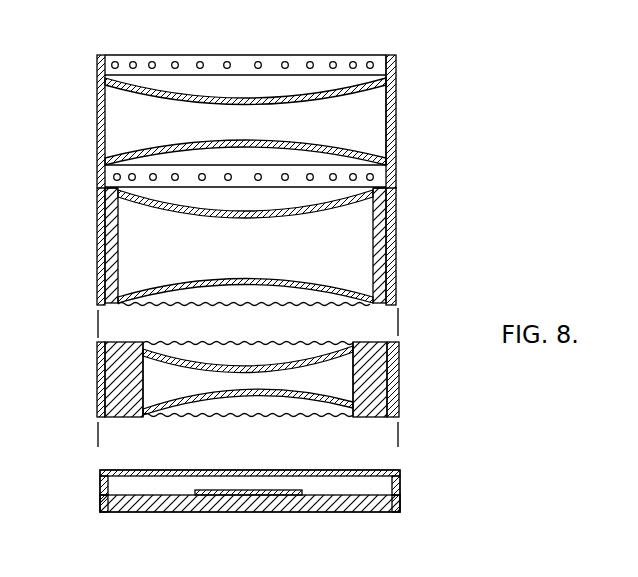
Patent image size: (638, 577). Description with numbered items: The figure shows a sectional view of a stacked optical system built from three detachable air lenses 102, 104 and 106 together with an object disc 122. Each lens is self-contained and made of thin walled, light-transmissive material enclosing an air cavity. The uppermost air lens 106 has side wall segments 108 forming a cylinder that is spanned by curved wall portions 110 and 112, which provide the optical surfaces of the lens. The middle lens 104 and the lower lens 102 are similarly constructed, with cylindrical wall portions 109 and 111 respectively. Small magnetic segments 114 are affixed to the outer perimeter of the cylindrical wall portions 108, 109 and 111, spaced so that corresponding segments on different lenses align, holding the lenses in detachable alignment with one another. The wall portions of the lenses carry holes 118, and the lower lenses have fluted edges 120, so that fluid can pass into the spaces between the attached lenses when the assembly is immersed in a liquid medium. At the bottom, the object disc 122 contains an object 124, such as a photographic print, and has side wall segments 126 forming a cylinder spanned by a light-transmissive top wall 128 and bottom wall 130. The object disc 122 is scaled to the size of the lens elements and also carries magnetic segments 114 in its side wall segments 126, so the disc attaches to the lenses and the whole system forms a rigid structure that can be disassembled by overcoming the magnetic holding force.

The air lens 102 is at (73, 387).
The air lens 104 is at (73, 255).
The air lens 106 is at (73, 131).
The side wall segments 108 is at (397, 121).
The cylindrical wall portion 109 is at (397, 241).
The curved wall portion 110 is at (168, 100).
The cylindrical wall portion 111 is at (399, 380).
The curved wall portion 112 is at (307, 140).
The magnetic segments 114 is at (398, 472).
The holes 118 is at (310, 61).
The fluted edges 120 is at (312, 343).
The object disc 122 is at (350, 542).
The object 124 is at (228, 490).
The side wall segments 126 is at (100, 503).
The top wall 128 is at (273, 470).
The bottom wall 130 is at (186, 512).